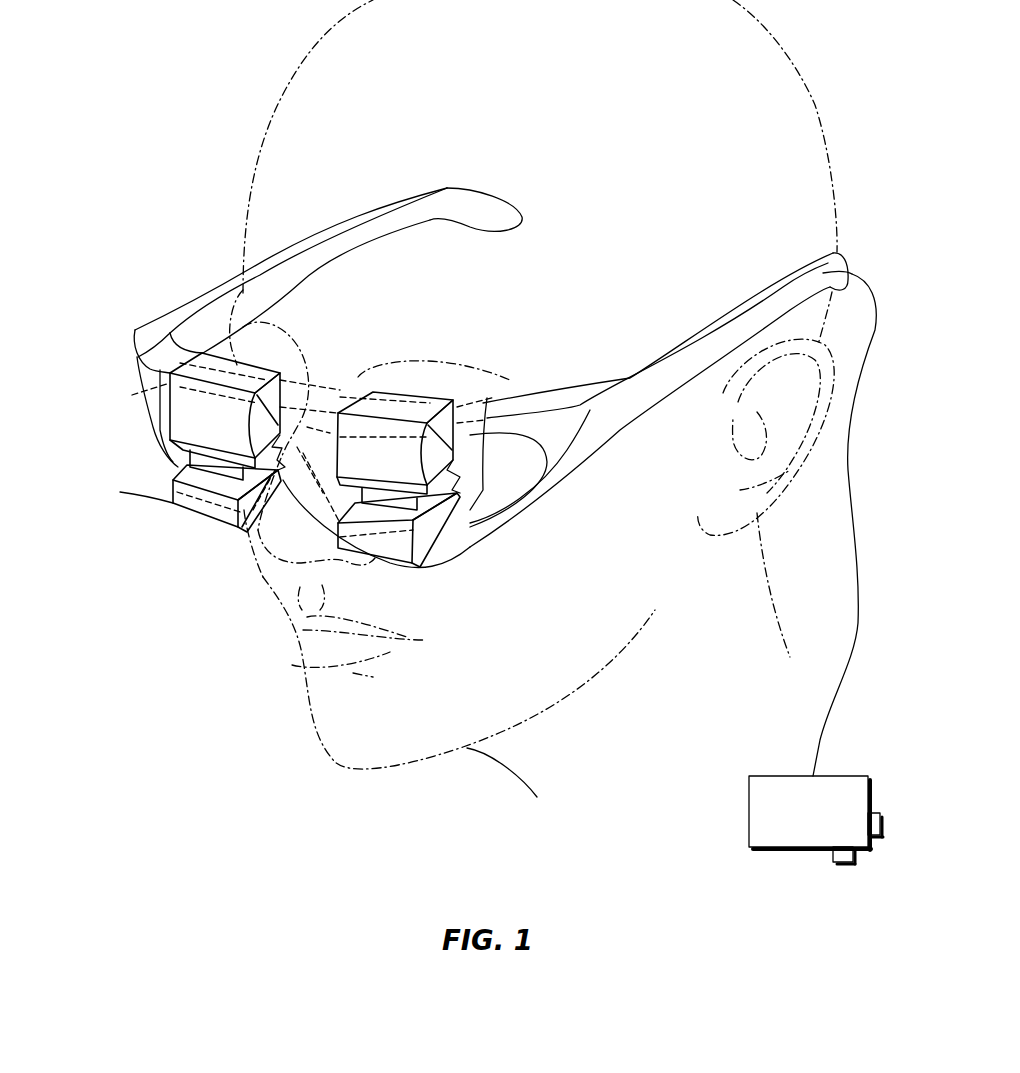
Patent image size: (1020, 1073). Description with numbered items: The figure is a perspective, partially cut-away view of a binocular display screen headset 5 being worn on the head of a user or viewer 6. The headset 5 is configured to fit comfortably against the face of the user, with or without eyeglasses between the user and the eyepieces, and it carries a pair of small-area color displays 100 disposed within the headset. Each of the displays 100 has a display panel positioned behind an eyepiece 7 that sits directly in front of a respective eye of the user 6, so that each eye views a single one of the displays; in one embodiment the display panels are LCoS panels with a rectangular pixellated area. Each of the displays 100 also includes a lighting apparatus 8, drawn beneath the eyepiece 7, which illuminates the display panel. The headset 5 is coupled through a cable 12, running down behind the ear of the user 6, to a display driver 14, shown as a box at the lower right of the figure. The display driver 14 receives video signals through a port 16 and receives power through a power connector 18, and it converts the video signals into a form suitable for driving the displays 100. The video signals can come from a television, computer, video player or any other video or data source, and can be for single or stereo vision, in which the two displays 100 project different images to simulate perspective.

The binocular display screen headset 5 is at (153, 330).
The user or viewer 6 is at (307, 113).
The eyepiece 7 is at (170, 420).
The lighting apparatus 8 is at (170, 500).
The small-area color display 100 is at (341, 504).
The cable 12 is at (823, 720).
The display driver 14 is at (748, 823).
The port 16 is at (877, 813).
The power connector 18 is at (843, 863).